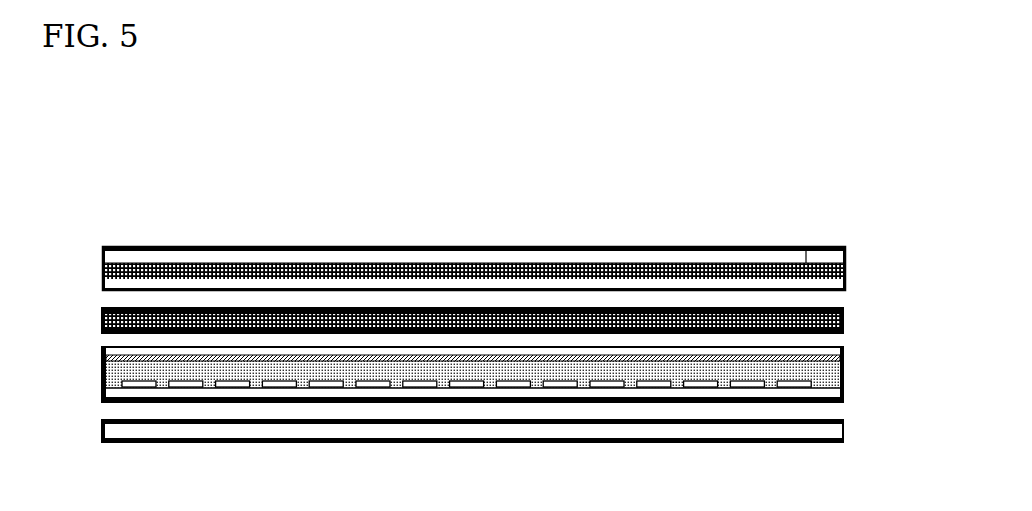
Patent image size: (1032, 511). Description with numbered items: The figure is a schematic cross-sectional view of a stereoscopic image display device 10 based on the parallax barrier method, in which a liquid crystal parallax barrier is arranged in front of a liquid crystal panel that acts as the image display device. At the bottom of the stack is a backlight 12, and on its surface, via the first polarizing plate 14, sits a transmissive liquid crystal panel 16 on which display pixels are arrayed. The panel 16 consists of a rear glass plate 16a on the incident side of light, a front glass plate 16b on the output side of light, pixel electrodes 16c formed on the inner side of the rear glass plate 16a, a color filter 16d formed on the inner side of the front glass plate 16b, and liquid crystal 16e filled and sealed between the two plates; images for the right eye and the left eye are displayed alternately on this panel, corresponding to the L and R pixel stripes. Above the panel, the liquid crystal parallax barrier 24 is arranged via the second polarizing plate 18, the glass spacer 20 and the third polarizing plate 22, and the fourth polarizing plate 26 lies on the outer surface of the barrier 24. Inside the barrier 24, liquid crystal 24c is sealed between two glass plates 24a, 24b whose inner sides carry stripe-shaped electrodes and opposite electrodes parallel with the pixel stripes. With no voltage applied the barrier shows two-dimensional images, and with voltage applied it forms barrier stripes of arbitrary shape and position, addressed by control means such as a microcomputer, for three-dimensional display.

The stereoscopic image display device 10 is at (433, 220).
The backlight 12 is at (108, 437).
The first polarizing plate 14 is at (693, 398).
The transmissive liquid crystal panel 16 is at (493, 415).
The rear glass plate 16a is at (772, 393).
The front glass plate 16b is at (843, 354).
The pixel electrodes 16c is at (429, 386).
The color filter 16d is at (843, 362).
The liquid crystal 16e is at (843, 380).
The second polarizing plate 18 is at (843, 332).
The glass spacer 20 is at (486, 308).
The third polarizing plate 22 is at (843, 308).
The liquid crystal parallax barrier 24 is at (483, 245).
The glass plate 24a is at (846, 284).
The glass plate 24b is at (740, 256).
The liquid crystal 24c is at (806, 262).
The fourth polarizing plate 26 is at (677, 247).